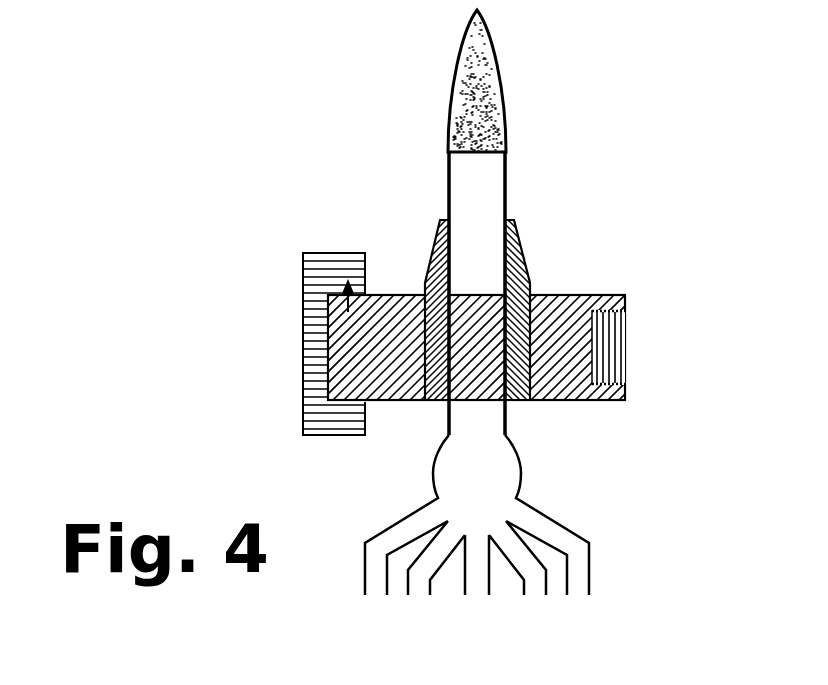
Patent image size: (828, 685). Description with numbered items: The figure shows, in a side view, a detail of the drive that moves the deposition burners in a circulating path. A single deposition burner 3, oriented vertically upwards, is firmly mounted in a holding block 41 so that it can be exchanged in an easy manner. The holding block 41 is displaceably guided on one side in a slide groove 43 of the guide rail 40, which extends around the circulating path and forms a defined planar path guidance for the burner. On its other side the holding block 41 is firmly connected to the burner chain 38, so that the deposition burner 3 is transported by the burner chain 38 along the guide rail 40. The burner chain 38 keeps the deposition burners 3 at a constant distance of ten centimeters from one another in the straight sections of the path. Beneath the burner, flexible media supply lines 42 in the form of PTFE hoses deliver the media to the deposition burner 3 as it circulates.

The deposition burner 3 is at (571, 170).
The burner chain 38 is at (612, 332).
The guide rail 40 is at (303, 372).
The holding block 41 is at (313, 338).
The flexible media supply lines 42 is at (550, 513).
The slide groove 43 is at (337, 333).